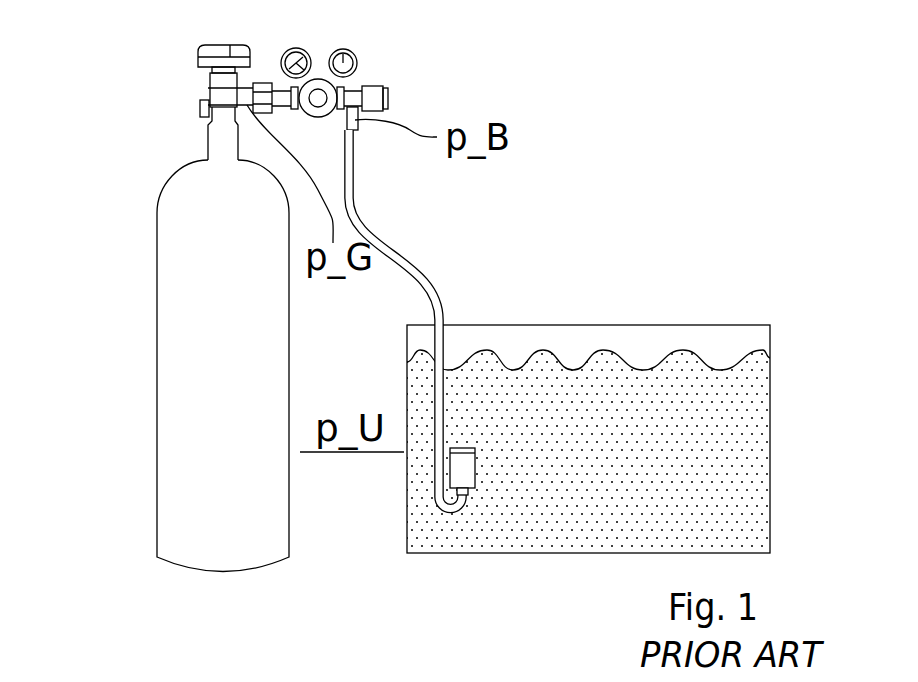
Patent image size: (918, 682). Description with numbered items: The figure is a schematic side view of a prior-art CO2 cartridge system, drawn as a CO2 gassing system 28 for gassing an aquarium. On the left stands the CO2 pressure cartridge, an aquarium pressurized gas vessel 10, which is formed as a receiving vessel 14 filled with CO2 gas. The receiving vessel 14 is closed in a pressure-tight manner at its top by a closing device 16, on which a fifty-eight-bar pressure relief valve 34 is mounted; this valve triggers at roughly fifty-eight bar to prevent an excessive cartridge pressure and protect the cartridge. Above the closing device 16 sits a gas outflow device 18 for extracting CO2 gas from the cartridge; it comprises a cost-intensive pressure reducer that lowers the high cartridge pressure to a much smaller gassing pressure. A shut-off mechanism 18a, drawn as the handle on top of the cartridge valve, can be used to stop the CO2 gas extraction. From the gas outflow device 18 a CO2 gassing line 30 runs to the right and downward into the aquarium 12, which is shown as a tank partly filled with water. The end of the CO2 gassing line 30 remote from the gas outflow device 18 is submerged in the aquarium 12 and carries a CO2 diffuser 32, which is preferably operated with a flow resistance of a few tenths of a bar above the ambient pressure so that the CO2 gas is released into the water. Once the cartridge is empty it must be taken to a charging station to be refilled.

The aquarium pressurized gas vessel 10 is at (168, 377).
The aquarium 12 is at (668, 392).
The receiving vessel 14 is at (192, 403).
The closing device 16 is at (225, 142).
The gas outflow device 18 is at (318, 96).
The shut-off mechanism 18a is at (227, 52).
The CO2 gassing system 28 is at (518, 298).
The CO2 gassing line 30 is at (435, 287).
The CO2 diffuser 32 is at (468, 462).
The 58 bar pressure relief valve 34 is at (203, 113).